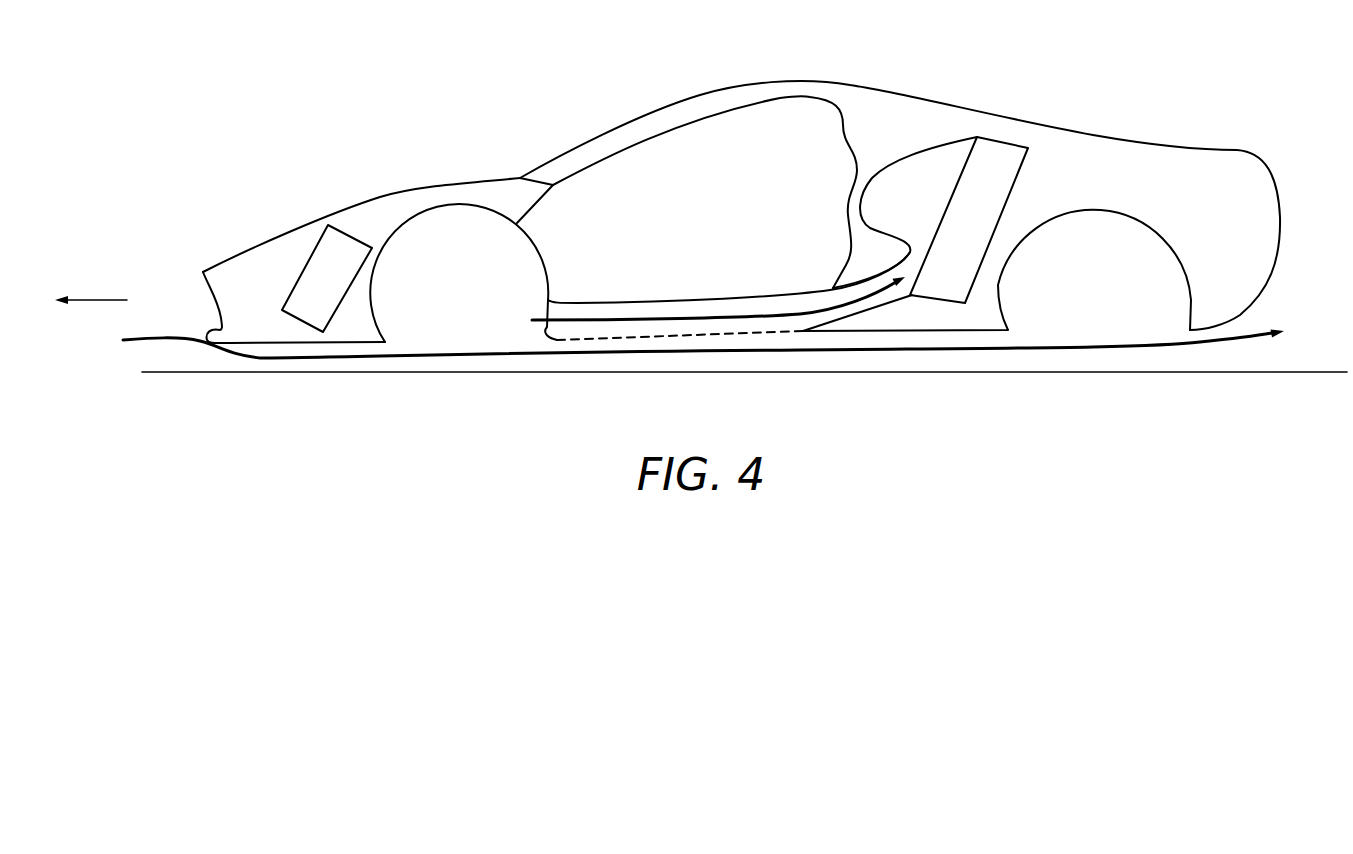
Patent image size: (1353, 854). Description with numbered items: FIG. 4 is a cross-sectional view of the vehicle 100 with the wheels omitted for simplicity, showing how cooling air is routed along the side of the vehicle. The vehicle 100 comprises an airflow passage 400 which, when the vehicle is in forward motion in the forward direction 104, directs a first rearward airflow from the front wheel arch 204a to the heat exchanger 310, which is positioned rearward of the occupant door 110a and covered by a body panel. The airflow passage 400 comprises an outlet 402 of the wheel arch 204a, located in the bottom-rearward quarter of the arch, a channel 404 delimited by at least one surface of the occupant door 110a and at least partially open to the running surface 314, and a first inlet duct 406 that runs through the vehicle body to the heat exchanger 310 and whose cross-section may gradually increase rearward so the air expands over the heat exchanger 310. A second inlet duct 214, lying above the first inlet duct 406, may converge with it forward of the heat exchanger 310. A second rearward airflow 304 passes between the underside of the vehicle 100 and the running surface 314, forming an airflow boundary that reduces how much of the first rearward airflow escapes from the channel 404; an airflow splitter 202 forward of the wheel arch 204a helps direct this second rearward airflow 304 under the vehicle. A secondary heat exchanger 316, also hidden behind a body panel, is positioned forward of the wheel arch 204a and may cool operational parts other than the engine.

The vehicle 100 is at (172, 98).
The front wheel arch 204a is at (405, 172).
The secondary heat exchanger 316 is at (318, 242).
The occupant door 110a is at (610, 183).
The second inlet duct 214 is at (917, 172).
The heat exchanger 310 is at (1003, 137).
The forward direction 104 is at (93, 300).
The airflow splitter 202 is at (203, 347).
The outlet 402 is at (555, 338).
The channel 404 is at (695, 337).
The first inlet duct 406 is at (870, 310).
The second rearward airflow 304 is at (1220, 348).
The running surface 314 is at (1318, 372).
The airflow passage 400 is at (508, 392).